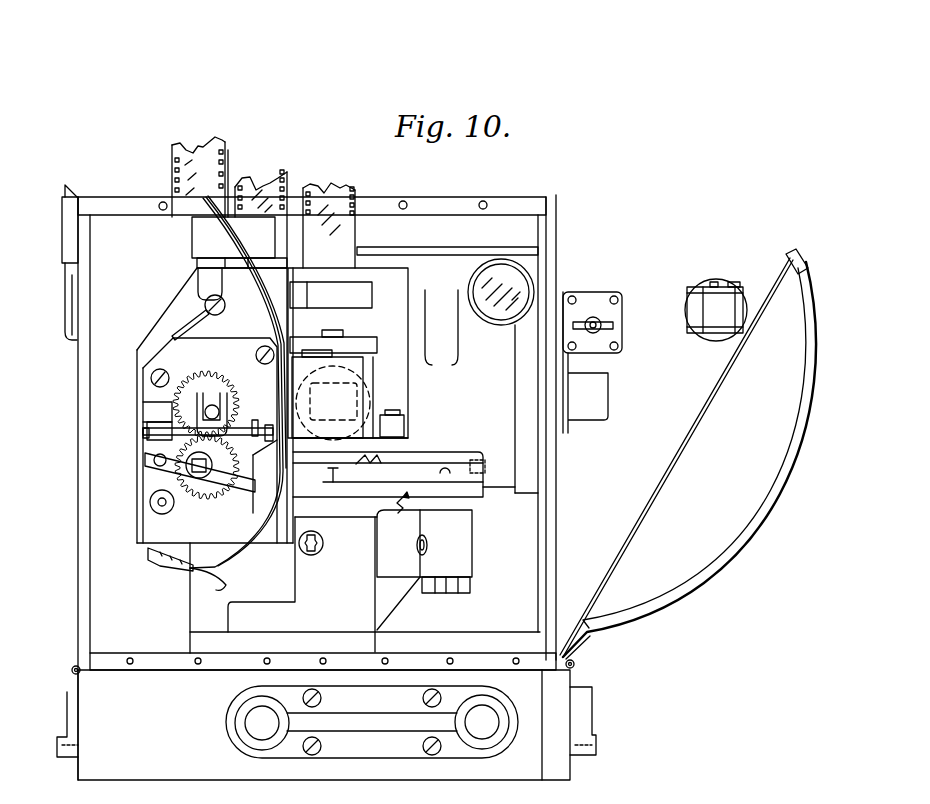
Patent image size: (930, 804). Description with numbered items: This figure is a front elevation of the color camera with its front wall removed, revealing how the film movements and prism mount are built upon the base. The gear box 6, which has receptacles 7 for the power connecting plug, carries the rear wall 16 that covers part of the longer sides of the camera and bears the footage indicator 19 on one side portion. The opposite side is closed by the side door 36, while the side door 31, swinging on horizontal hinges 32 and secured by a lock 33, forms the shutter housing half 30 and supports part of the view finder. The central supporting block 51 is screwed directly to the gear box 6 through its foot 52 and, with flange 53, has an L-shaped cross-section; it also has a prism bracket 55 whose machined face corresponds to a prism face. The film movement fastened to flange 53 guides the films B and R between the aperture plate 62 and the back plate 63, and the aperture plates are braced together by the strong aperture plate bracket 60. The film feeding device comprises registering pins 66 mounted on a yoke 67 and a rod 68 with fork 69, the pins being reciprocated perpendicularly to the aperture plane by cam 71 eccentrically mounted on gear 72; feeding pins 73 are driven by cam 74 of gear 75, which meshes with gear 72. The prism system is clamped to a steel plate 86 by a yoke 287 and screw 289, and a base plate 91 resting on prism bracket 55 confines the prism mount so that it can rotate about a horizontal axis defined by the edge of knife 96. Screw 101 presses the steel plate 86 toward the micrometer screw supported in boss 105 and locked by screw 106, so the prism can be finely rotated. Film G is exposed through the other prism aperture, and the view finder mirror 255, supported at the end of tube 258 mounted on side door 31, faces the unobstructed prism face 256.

The gear box 6 is at (118, 656).
The receptacles 7 is at (68, 758).
The rear wall 16 is at (549, 538).
The footage indicator 19 is at (596, 300).
The shutter housing half 30 is at (697, 568).
The side door 31 is at (668, 448).
The horizontal hinges 32 is at (578, 664).
The lock 33 is at (797, 255).
The side door 36 is at (78, 568).
The central supporting block 51 is at (302, 584).
The foot 52 is at (384, 641).
The flange 53 is at (140, 412).
The prism bracket 55 is at (400, 510).
The aperture plate bracket 60 is at (360, 293).
The aperture plate 62 is at (288, 298).
The back plate 63 is at (258, 509).
The registering pins 66 is at (267, 420).
The yoke 67 is at (208, 413).
The rod 68 is at (187, 428).
The fork 69 is at (230, 396).
The cam 71 is at (213, 405).
The gear 72 is at (207, 380).
The feeding pins 73 is at (182, 458).
The cam 74 is at (197, 477).
The gear 75 is at (210, 497).
The steel plate 86 is at (385, 447).
The base plate 91 is at (478, 500).
The knife 96 is at (380, 467).
The screw 101 is at (393, 418).
The boss 105 is at (473, 540).
The screw 106 is at (417, 547).
The mirror 255 is at (690, 307).
The face 256 is at (362, 408).
The tube 258 is at (718, 283).
The yoke 287 is at (376, 343).
The screw 289 is at (368, 388).
The film B is at (222, 152).
The film R is at (276, 160).
The film G is at (340, 182).